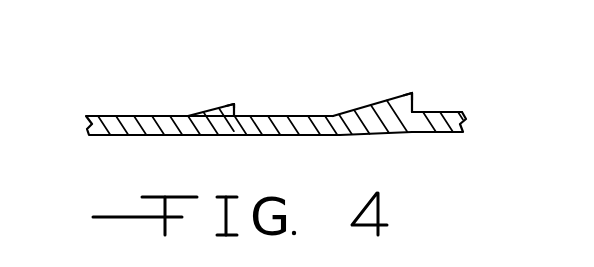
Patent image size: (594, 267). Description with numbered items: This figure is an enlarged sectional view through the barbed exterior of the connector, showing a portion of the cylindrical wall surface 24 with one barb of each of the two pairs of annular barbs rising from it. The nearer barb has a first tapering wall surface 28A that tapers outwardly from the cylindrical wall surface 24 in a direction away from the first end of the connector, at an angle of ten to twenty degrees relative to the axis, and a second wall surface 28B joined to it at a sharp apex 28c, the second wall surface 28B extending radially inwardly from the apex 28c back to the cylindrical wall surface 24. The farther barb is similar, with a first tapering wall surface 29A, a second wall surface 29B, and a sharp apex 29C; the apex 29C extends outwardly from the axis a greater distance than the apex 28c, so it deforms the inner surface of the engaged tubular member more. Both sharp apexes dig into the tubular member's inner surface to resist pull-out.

The cylindrical wall surface 24 is at (125, 116).
The first tapering wall surface 28A is at (226, 107).
The second wall surface 28B is at (235, 111).
The apex 28c is at (234, 105).
The first tapering wall surface 29A is at (367, 109).
The second wall surface 29B is at (418, 105).
The apex 29C is at (414, 92).